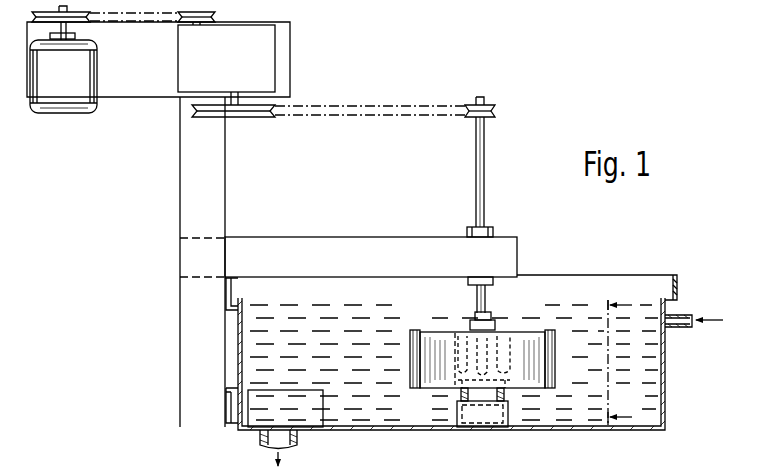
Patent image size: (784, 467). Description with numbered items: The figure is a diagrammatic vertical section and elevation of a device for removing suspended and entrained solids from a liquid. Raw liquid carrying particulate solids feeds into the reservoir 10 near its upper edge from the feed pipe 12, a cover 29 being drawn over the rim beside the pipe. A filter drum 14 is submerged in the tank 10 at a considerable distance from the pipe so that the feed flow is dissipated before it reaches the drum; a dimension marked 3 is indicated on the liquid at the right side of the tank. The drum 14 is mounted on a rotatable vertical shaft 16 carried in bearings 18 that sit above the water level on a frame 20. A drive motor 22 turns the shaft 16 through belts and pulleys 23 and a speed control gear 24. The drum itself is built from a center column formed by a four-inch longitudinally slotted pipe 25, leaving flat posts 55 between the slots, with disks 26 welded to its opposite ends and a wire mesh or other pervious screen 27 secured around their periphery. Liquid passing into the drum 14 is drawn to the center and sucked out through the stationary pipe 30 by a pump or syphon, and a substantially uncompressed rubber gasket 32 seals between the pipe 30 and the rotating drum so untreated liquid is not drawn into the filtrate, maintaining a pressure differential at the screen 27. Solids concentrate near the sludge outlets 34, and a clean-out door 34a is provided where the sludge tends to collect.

The dimension marker 3 is at (620, 362).
The reservoir 10 is at (670, 371).
The feed pipe 12 is at (689, 312).
The filter drum 14 is at (562, 358).
The rotatable vertical shaft 16 is at (493, 288).
The bearings 18 is at (472, 240).
The frame 20 is at (356, 264).
The drive motor 22 is at (96, 84).
The belts and pulleys 23 is at (488, 103).
The speed control gear 24 is at (265, 69).
The pipe 25 is at (458, 342).
The disks 26 is at (418, 330).
The screen 27 is at (538, 377).
The cover plate 29 is at (677, 276).
The pipe 30 is at (508, 413).
The rubber gasket 32 is at (460, 393).
The sludge outlets 34 is at (297, 445).
The clean-out door 34a is at (262, 420).
The flat posts 55 is at (500, 354).